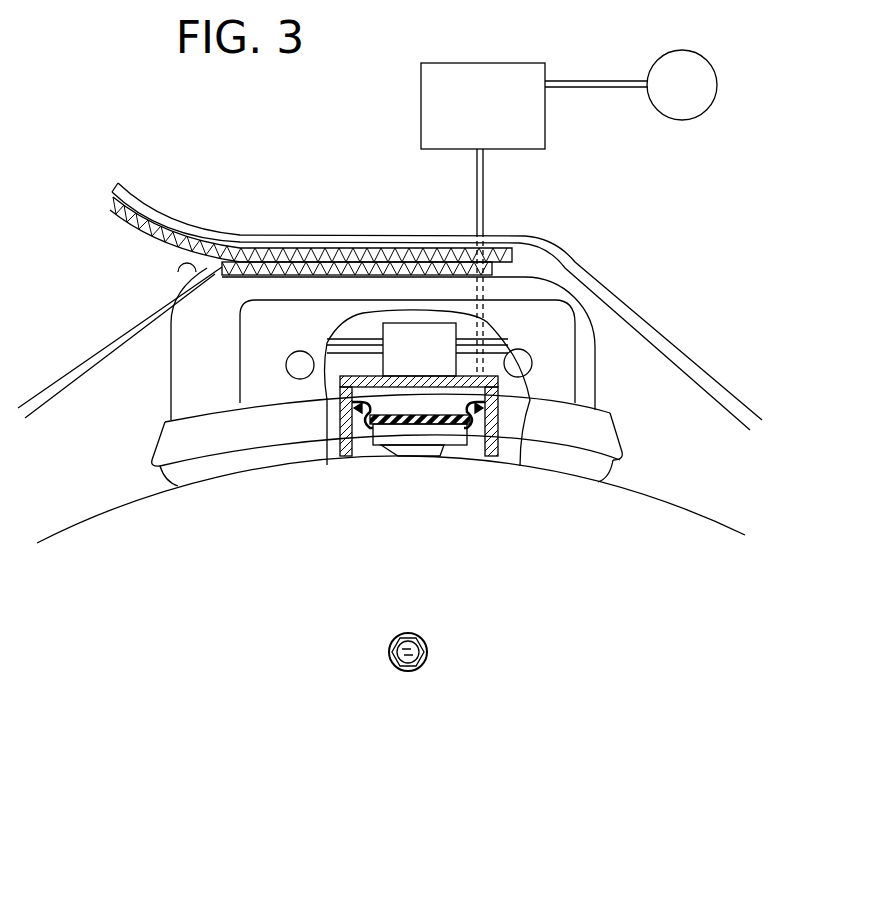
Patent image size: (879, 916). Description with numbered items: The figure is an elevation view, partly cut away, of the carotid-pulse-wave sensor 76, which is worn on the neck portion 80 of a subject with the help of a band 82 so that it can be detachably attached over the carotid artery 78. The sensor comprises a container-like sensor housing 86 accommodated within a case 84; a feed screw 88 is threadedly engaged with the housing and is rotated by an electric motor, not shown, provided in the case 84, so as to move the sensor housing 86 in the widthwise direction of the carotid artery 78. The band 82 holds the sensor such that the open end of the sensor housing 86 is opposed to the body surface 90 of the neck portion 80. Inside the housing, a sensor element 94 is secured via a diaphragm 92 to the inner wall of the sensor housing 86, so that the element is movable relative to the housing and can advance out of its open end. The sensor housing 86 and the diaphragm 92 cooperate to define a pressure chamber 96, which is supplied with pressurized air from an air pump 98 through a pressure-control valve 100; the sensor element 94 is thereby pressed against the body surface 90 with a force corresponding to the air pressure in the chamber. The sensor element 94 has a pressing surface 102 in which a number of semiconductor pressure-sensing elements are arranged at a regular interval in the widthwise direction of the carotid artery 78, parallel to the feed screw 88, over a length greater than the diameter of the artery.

The carotid-pulse-wave sensor 76 is at (80, 178).
The carotid artery 78 is at (407, 700).
The neck portion 80 is at (123, 523).
The band 82 is at (83, 363).
The case 84 is at (535, 283).
The sensor housing 86 is at (572, 390).
The feed screw 88 is at (540, 330).
The body surface 90 is at (658, 498).
The diaphragm 92 is at (475, 435).
The sensor element 94 is at (393, 433).
The pressure chamber 96 is at (435, 409).
The air pump 98 is at (693, 65).
The pressure-control valve 100 is at (493, 67).
The pressing surface 102 is at (412, 459).